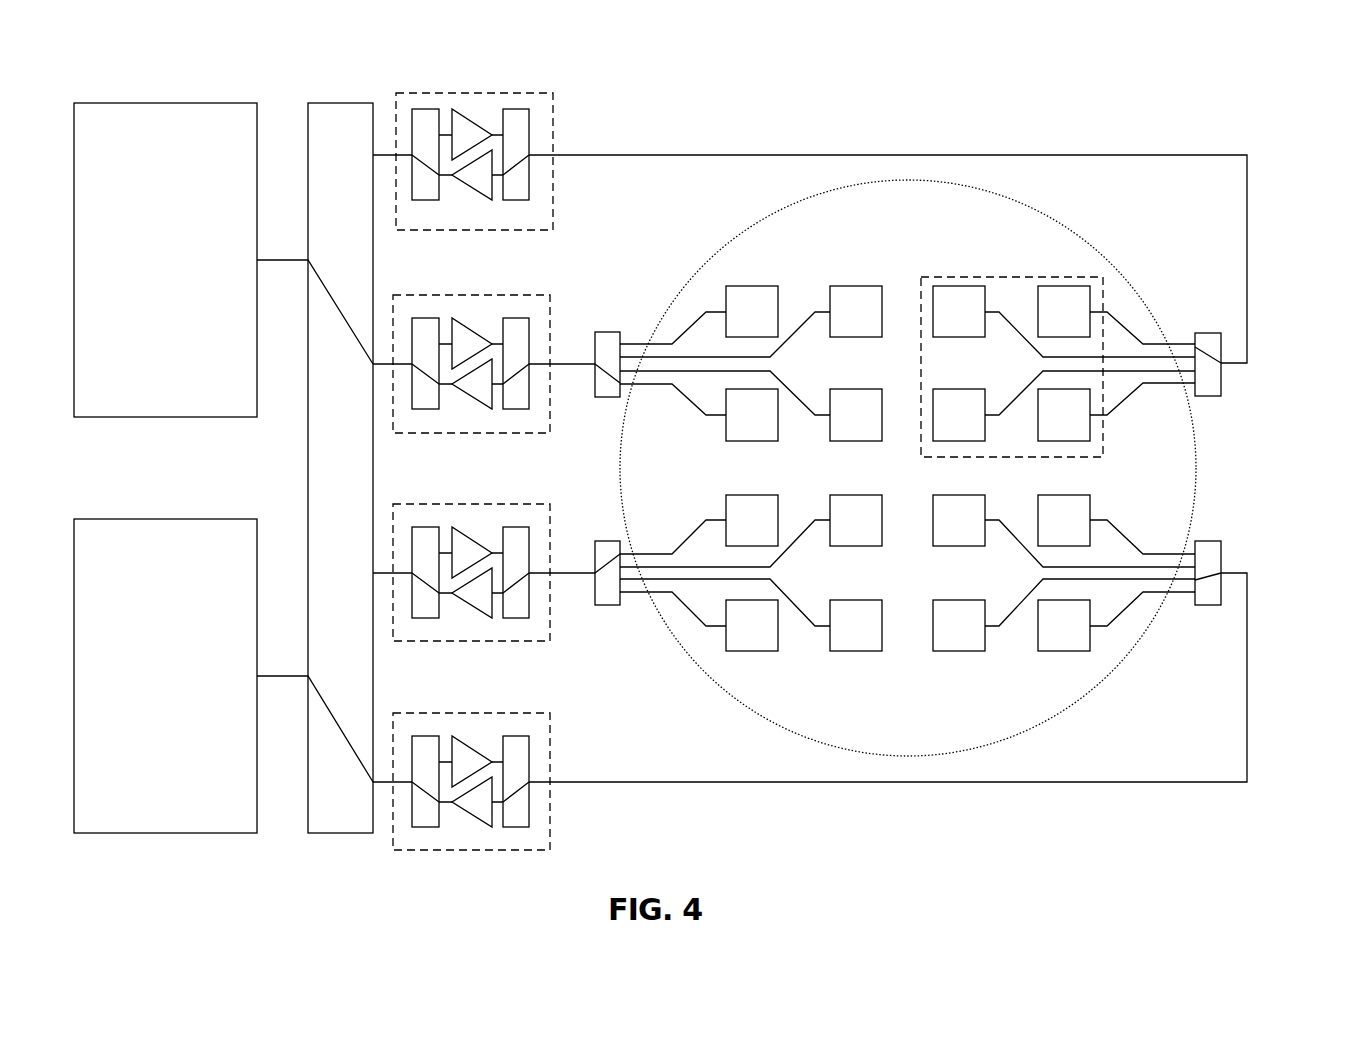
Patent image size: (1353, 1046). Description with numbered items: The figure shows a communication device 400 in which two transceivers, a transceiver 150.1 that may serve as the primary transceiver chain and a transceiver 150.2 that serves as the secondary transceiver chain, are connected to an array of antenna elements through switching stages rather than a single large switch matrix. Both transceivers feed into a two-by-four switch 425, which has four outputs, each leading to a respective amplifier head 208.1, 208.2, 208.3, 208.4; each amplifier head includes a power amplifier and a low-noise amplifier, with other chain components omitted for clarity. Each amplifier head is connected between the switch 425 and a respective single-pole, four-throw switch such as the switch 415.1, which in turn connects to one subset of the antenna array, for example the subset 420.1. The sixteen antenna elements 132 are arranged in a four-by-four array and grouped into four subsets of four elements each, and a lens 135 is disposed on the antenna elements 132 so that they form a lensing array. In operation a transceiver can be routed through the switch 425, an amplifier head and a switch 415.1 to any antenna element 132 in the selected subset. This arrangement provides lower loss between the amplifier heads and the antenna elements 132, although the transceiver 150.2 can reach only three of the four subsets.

The communication device 400 is at (704, 501).
The transceiver 150.1 is at (165, 260).
The transceiver 150.2 is at (165, 676).
The 2:4 switch 425 is at (307, 108).
The amplifier head 208.1 is at (553, 118).
The amplifier head 208.2 is at (480, 295).
The amplifier head 208.3 is at (457, 504).
The amplifier head 208.4 is at (417, 713).
The lens 135 is at (1196, 473).
The subset 420.1 is at (1016, 329).
The antenna element 132 is at (1073, 286).
The switch 415.1 is at (1222, 385).